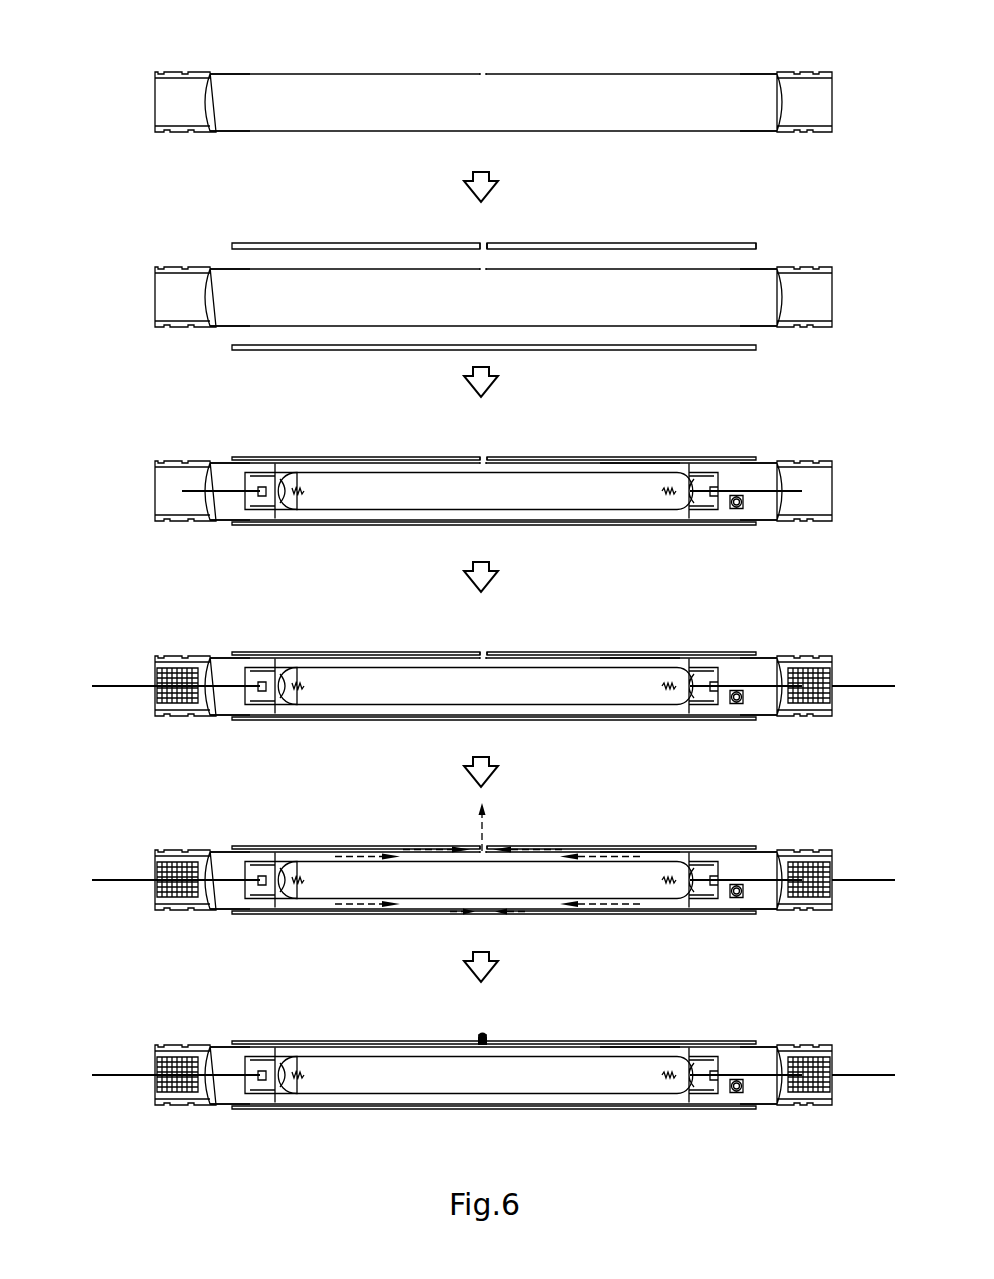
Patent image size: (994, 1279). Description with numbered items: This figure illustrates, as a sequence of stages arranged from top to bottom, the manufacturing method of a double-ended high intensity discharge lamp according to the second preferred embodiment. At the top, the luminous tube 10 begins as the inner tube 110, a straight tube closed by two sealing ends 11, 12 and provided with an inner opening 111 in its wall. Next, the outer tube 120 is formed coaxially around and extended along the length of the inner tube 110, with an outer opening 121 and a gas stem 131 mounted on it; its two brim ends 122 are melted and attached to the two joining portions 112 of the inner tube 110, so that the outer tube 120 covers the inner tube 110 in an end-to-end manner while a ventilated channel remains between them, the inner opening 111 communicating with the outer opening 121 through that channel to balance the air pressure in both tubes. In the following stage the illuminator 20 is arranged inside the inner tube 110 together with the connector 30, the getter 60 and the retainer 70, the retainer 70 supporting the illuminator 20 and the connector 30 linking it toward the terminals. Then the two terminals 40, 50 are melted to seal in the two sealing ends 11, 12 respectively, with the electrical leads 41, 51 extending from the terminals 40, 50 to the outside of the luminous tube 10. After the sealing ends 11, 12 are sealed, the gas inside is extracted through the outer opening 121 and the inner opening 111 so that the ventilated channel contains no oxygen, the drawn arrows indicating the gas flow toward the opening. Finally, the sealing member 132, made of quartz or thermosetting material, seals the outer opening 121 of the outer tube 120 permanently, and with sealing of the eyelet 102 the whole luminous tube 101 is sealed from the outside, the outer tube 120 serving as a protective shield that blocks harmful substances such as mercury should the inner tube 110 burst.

The luminous tube 10 is at (640, 720).
The sealing end 11 is at (818, 132).
The sealing end 12 is at (190, 132).
The illuminator 20 is at (485, 816).
The connector 30 is at (243, 811).
The terminal 40 is at (833, 849).
The electrical lead 41 is at (875, 862).
The terminal 50 is at (159, 849).
The electrical lead 51 is at (111, 862).
The getter 60 is at (761, 827).
The retainer 70 is at (732, 748).
The luminous tube 101 is at (229, 74).
The eyelet 102 is at (476, 1005).
The inner tube 110 is at (616, 73).
The inner opening 111 is at (471, 67).
The joining portion 112 is at (758, 73).
The outer tube 120 is at (494, 644).
The outer opening 121 is at (443, 514).
The brim end 122 is at (741, 214).
The gas stem 131 is at (536, 209).
The sealing member 132 is at (428, 1019).